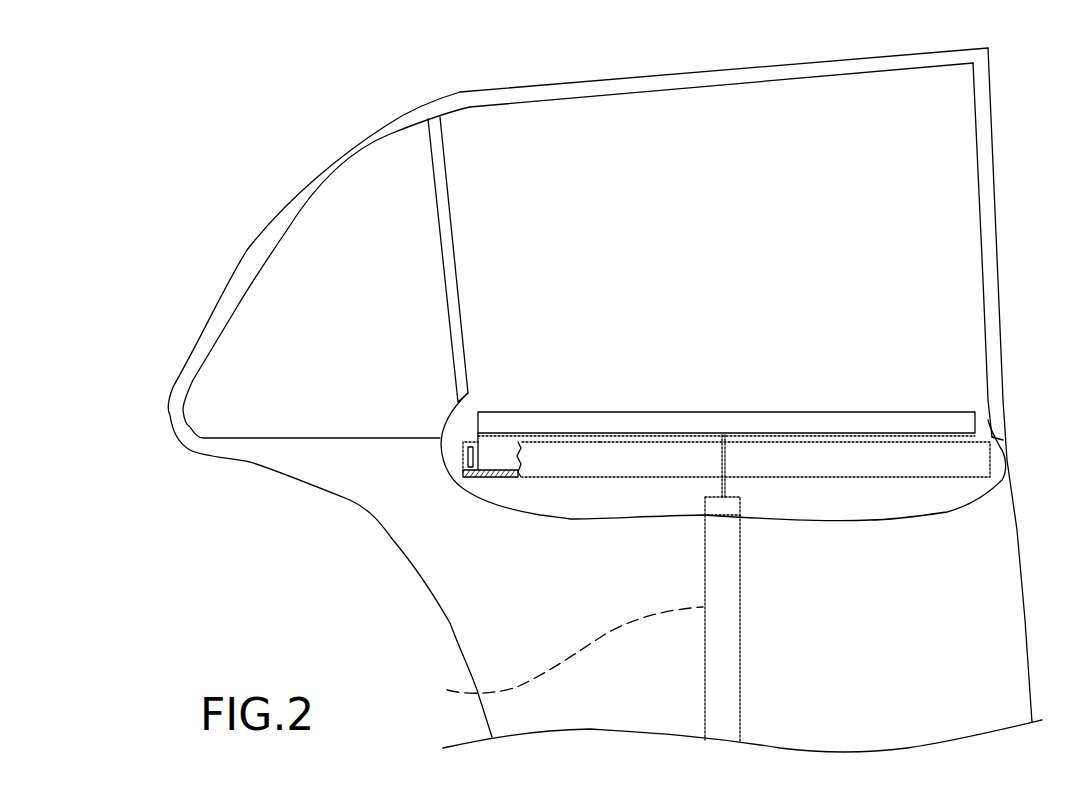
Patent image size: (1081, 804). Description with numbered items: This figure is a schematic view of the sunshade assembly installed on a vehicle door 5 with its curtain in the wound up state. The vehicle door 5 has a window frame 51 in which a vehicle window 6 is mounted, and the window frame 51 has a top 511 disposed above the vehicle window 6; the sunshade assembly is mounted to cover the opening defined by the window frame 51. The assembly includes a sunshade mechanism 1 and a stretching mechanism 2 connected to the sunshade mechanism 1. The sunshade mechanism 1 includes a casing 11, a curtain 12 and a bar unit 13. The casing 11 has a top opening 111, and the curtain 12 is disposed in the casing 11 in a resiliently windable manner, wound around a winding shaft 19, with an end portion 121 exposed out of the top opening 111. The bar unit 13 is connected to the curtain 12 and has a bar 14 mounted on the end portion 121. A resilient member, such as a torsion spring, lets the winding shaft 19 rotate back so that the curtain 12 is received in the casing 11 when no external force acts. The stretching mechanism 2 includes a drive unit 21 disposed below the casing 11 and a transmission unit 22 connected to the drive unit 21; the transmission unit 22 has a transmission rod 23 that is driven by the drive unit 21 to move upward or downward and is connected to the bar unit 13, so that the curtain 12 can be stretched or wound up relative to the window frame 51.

The sunshade mechanism 1 is at (998, 460).
The casing 11 is at (955, 470).
The top opening 111 is at (583, 442).
The curtain 12 is at (490, 458).
The end portion 121 is at (507, 440).
The bar unit 13 is at (882, 418).
The bar 14 is at (935, 418).
The winding shaft 19 is at (473, 462).
The stretching mechanism 2 is at (757, 508).
The drive unit 21 is at (559, 658).
The transmission unit 22 is at (708, 487).
The transmission rod 23 is at (740, 485).
The vehicle door 5 is at (277, 183).
The window frame 51 is at (387, 122).
The top 511 is at (657, 82).
The vehicle window 6 is at (930, 222).